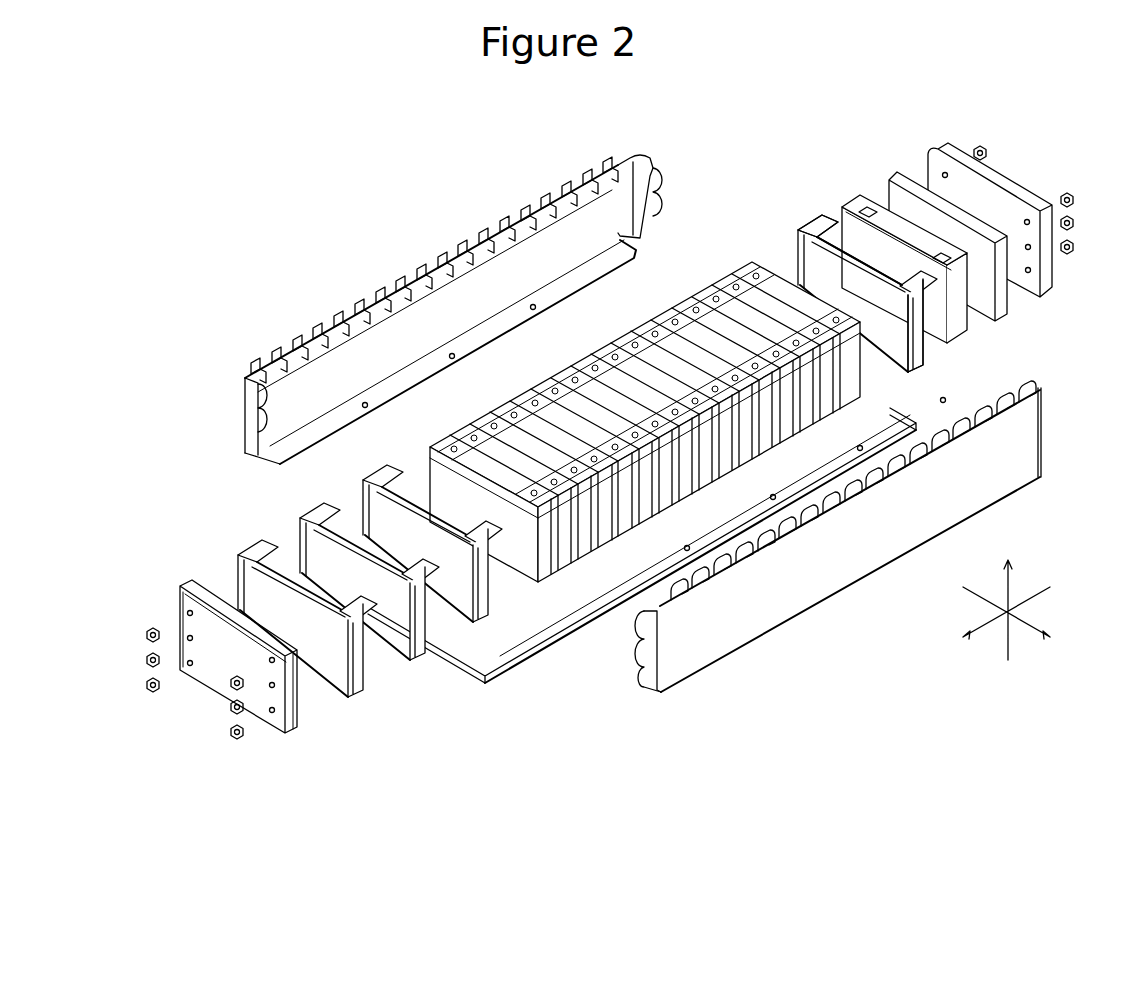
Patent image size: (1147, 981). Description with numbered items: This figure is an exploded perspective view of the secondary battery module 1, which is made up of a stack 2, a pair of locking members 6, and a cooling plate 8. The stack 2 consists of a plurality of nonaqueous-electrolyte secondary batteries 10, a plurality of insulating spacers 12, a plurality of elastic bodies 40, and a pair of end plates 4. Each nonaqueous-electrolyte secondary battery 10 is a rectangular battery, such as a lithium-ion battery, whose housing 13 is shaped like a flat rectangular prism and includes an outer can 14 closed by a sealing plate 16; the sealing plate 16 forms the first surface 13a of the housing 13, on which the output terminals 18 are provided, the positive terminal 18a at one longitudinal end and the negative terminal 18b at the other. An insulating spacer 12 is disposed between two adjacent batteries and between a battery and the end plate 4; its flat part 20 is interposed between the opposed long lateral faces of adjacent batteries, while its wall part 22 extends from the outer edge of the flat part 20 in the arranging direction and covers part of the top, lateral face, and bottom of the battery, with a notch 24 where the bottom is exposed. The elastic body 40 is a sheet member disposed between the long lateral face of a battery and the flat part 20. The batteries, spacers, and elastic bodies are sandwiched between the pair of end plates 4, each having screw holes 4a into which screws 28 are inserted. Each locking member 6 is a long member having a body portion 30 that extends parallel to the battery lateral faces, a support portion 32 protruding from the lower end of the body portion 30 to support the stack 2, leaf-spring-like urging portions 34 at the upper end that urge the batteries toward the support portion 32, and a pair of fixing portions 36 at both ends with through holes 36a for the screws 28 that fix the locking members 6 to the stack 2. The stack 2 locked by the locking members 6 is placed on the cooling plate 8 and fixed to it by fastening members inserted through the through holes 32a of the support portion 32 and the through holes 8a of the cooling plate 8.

The secondary battery module 1 is at (605, 818).
The stack 2 is at (762, 266).
The end plate 4 is at (647, 441).
The screw hole 4a is at (272, 733).
The locking member 6 is at (640, 425).
The cooling plate 8 is at (642, 580).
The through hole 8a is at (538, 655).
The nonaqueous-electrolyte secondary battery 10 is at (896, 235).
The insulating spacer 12 is at (905, 254).
The housing 13 is at (882, 217).
The first surface 13a is at (943, 248).
The outer can 14 is at (835, 215).
The sealing plate 16 is at (858, 208).
The output terminal 18 is at (966, 218).
The positive terminal 18a is at (900, 178).
The negative terminal 18b is at (1005, 200).
The flat part 20 is at (800, 230).
The wall part 22 is at (803, 256).
The notch 24 is at (906, 374).
The screw 28 is at (237, 740).
The body portion 30 is at (618, 166).
The support portion 32 is at (459, 490).
The through hole 32a is at (552, 305).
The urging portion 34 is at (440, 260).
The fixing portion 36 is at (618, 419).
The through hole 36a is at (665, 198).
The elastic body 40 is at (878, 345).